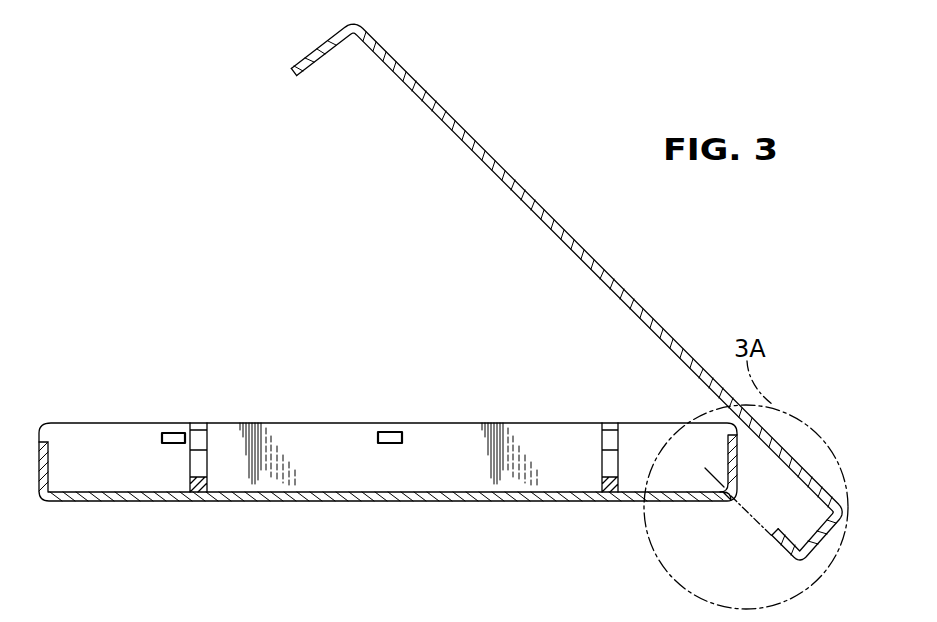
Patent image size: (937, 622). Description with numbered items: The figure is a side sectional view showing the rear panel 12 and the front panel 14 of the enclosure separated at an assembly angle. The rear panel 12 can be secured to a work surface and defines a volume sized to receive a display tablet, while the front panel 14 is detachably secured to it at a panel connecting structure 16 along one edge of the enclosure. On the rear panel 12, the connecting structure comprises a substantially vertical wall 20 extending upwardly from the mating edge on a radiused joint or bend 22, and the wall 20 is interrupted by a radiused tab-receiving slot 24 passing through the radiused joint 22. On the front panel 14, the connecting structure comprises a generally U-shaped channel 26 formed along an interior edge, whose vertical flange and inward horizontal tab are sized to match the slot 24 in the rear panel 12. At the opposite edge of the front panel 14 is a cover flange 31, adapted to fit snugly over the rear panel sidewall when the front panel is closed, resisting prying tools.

The rear panel 12 is at (422, 494).
The front panel 14 is at (516, 178).
The panel connecting structure 16 is at (741, 532).
The vertical wall 20 is at (731, 449).
The radiused joint 22 is at (736, 494).
The tab-receiving slot 24 is at (730, 504).
The U-shaped channel 26 is at (821, 518).
The cover flange 31 is at (312, 51).